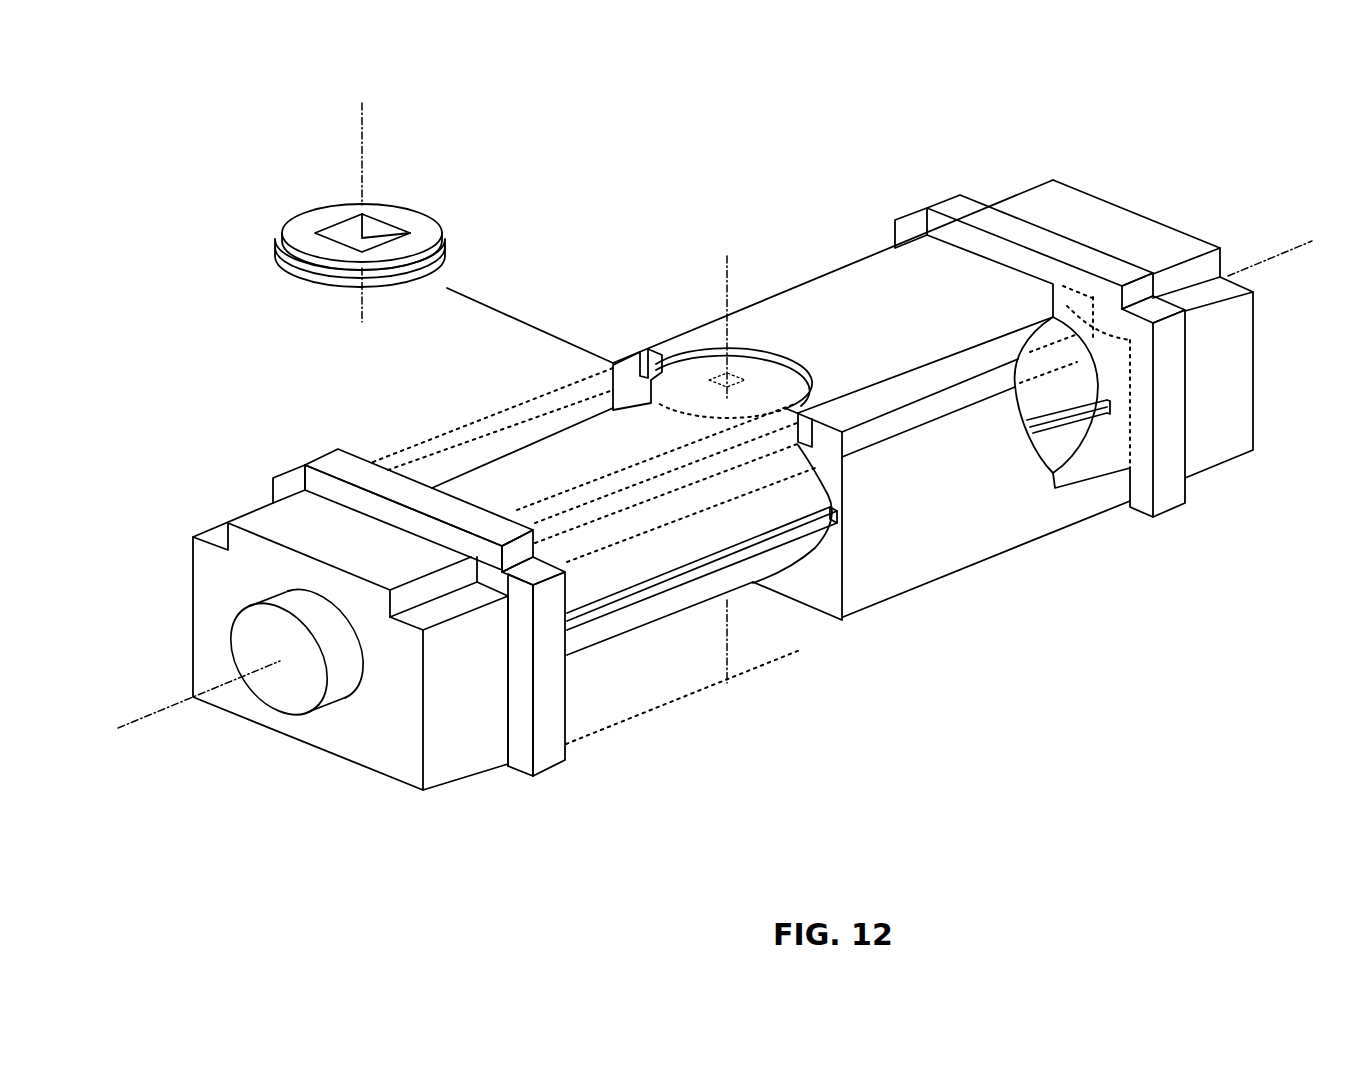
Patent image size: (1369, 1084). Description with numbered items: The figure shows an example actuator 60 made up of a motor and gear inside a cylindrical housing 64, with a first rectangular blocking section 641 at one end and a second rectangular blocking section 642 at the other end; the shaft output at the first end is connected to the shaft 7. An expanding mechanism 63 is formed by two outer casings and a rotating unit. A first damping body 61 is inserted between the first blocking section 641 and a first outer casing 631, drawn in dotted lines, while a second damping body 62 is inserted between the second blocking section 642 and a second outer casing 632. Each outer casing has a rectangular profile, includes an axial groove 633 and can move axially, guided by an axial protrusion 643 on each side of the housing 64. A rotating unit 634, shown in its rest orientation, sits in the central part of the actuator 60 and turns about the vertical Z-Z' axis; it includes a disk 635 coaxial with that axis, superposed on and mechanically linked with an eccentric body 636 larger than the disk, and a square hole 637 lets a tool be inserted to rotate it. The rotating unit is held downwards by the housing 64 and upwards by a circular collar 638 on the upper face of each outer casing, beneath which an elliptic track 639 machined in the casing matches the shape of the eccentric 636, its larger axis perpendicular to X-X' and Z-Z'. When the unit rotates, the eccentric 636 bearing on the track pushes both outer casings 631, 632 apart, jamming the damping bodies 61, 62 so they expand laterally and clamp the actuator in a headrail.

The shaft 7 is at (251, 647).
The actuator 60 is at (297, 761).
The first damping body 61 is at (290, 467).
The second damping body 62 is at (930, 208).
The expanding mechanism 63 is at (718, 343).
The cylindrical housing 64 is at (500, 477).
The first outer casing 631 is at (652, 690).
The second outer casing 632 is at (1032, 522).
The axial groove 633 is at (893, 570).
The rotating unit 634 is at (312, 210).
The disk 635 is at (307, 263).
The eccentric body 636 is at (408, 288).
The square hole 637 is at (375, 233).
The circular collar 638 is at (805, 377).
The elliptic track 639 is at (708, 389).
The first rectangular blocking section 641 is at (427, 783).
The second rectangular blocking section 642 is at (1222, 455).
The axial protrusion 643 is at (697, 563).